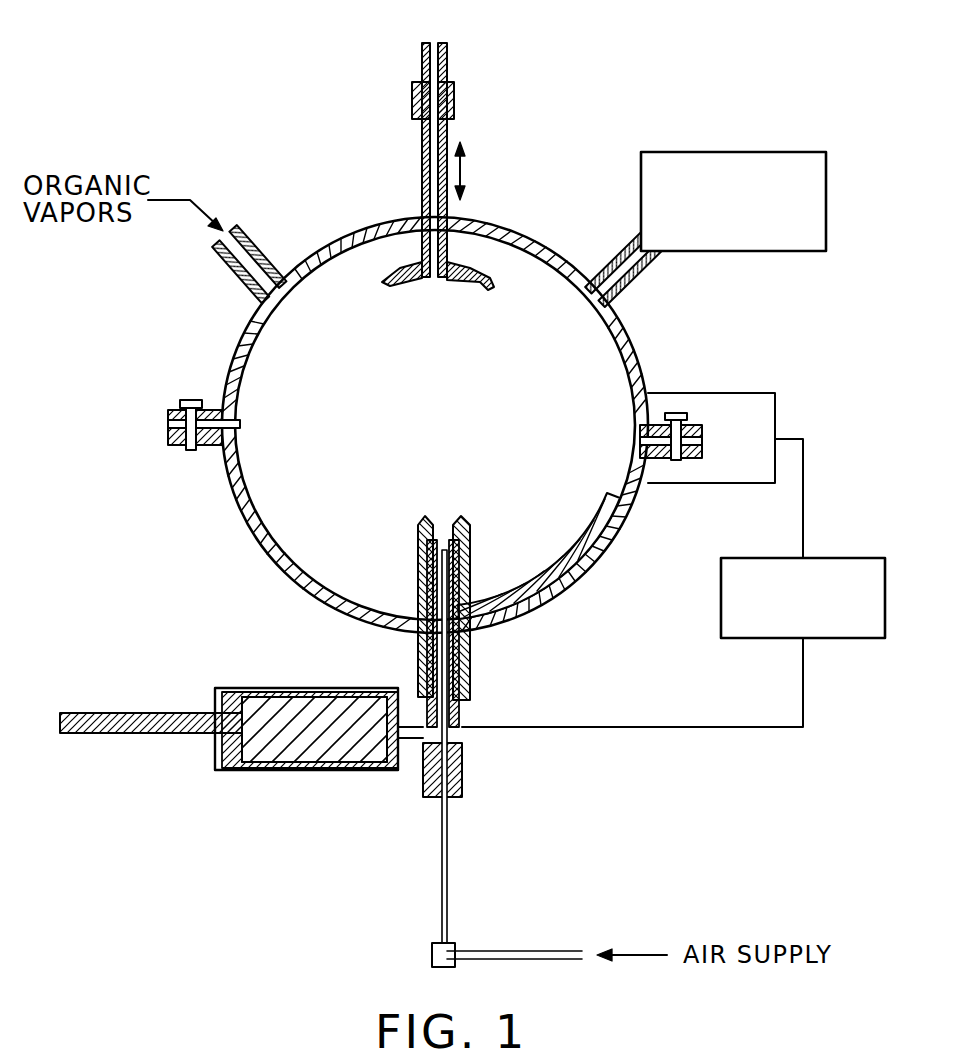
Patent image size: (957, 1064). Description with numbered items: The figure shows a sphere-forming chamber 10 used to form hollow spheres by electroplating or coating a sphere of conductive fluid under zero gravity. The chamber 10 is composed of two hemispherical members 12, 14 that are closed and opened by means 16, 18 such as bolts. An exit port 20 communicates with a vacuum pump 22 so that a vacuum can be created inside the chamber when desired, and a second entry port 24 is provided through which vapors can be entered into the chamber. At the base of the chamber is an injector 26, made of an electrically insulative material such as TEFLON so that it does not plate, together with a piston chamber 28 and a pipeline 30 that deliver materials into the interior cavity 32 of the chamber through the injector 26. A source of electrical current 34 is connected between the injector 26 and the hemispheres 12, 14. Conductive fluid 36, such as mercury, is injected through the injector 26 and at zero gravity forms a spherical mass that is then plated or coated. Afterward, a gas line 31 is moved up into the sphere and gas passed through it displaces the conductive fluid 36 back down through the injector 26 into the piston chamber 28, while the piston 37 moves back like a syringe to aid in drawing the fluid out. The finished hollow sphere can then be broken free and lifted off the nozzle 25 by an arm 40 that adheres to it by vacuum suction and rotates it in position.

The sphere-forming chamber 10 is at (250, 527).
The hemispherical member 12 is at (640, 362).
The hemispherical member 14 is at (595, 568).
The closing means 16 is at (180, 410).
The closing means 18 is at (702, 432).
The exit port 20 is at (622, 242).
The vacuum pump 22 is at (820, 234).
The second entry port 24 is at (257, 238).
The injector nozzle 25 is at (463, 523).
The injector 26 is at (473, 695).
The piston chamber 28 is at (323, 772).
The pipeline 30 is at (462, 713).
The gas line 31 is at (447, 895).
The interior cavity 32 is at (590, 498).
The source of electrical current 34 is at (848, 638).
The conductive fluid 36 is at (288, 695).
The piston 37 is at (187, 735).
The arm 40 is at (438, 190).